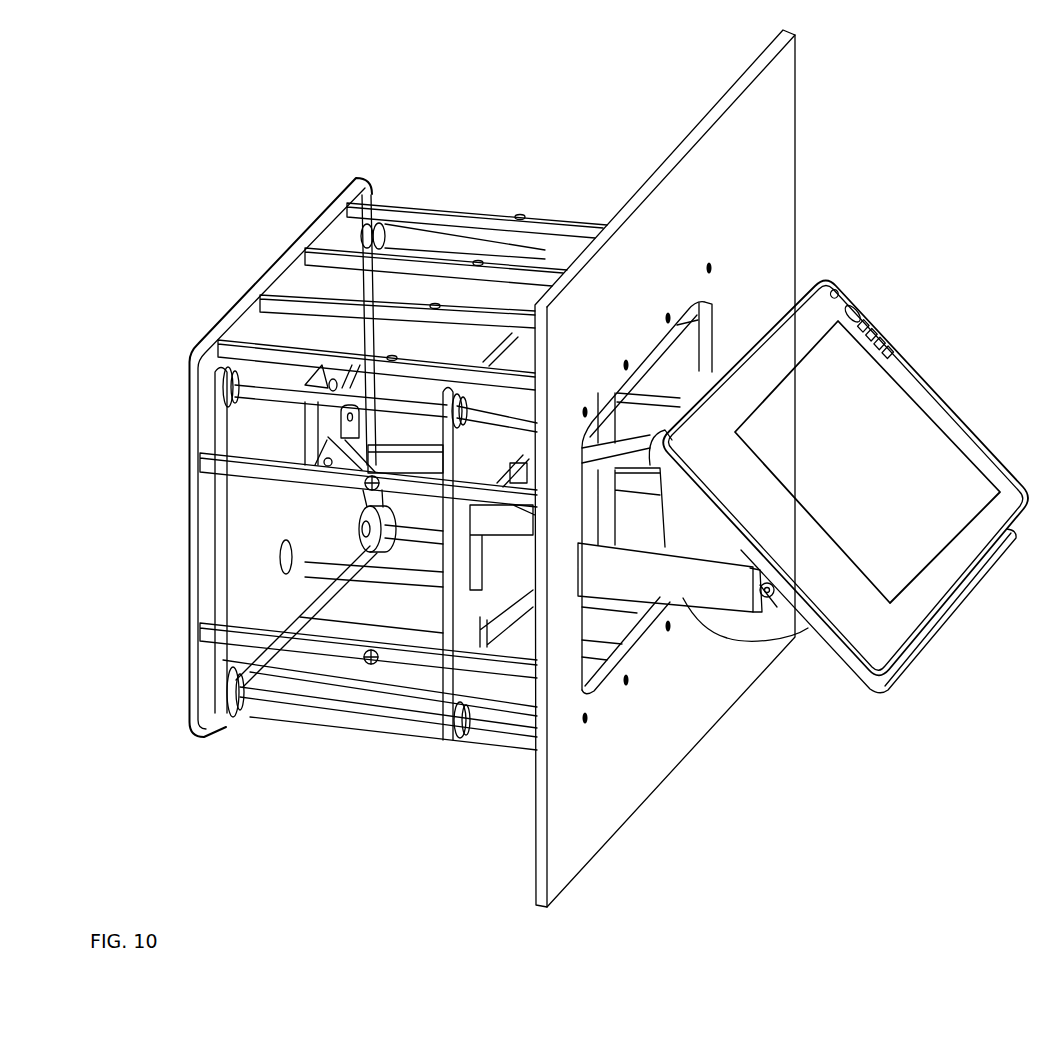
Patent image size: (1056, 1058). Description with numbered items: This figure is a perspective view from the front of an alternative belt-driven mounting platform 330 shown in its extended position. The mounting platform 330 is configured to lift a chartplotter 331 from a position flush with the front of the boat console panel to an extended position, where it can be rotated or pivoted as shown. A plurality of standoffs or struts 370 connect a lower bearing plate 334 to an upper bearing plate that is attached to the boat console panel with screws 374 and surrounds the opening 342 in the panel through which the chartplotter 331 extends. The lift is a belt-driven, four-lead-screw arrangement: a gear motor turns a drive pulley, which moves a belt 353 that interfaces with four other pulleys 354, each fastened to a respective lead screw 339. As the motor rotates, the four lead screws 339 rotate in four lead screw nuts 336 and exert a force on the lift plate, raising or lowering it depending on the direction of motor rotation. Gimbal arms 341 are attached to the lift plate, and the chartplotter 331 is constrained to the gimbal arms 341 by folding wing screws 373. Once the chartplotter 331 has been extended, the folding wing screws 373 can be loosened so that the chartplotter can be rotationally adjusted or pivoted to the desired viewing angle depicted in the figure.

The mounting platform 330 is at (538, 173).
The chartplotter 331 is at (961, 421).
The lower bearing plate 334 is at (338, 195).
The lead screw nut 336 is at (461, 735).
The lead screw 339 is at (344, 703).
The gimbal arm 341 is at (680, 580).
The opening 342 is at (686, 349).
The belt 353 is at (220, 555).
The pulley 354 is at (237, 706).
The standoff or strut 370 is at (470, 205).
The folding wing screw 373 is at (791, 627).
The screw 374 is at (712, 266).